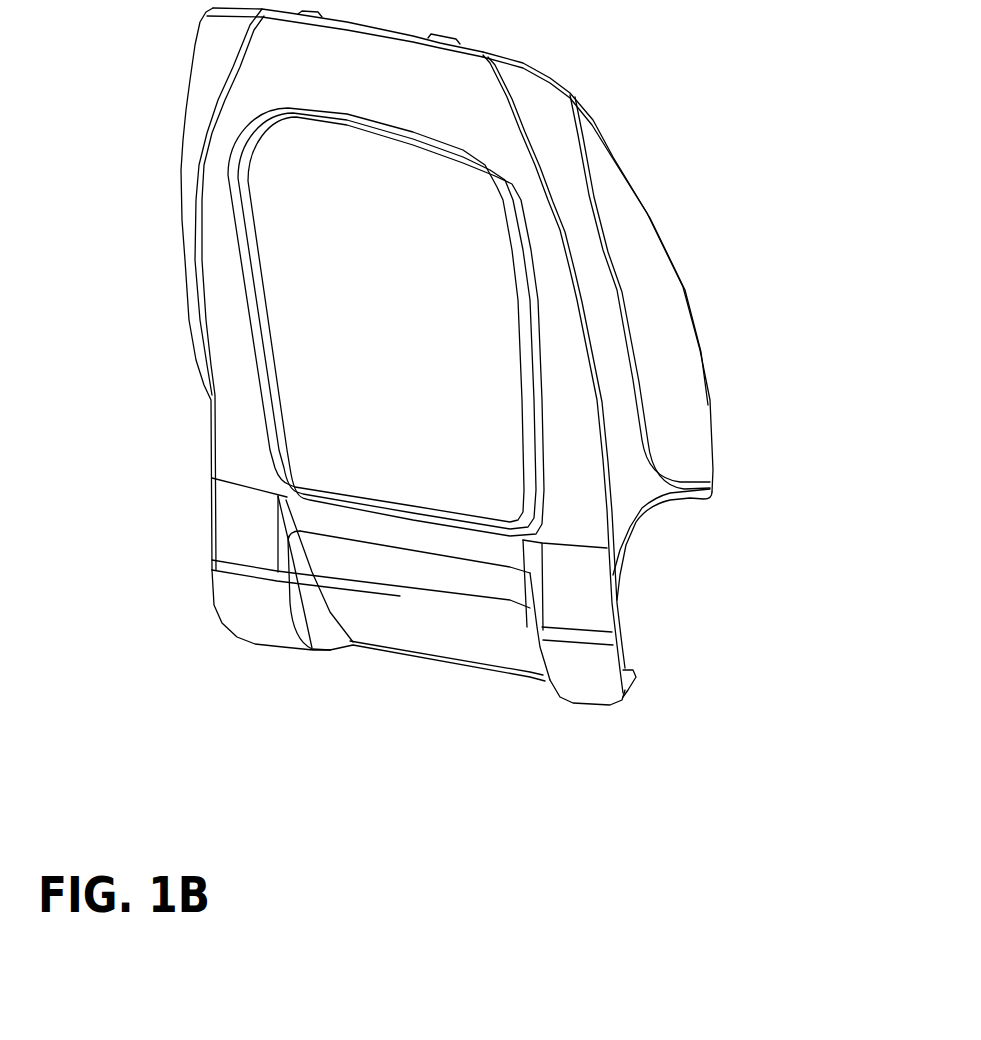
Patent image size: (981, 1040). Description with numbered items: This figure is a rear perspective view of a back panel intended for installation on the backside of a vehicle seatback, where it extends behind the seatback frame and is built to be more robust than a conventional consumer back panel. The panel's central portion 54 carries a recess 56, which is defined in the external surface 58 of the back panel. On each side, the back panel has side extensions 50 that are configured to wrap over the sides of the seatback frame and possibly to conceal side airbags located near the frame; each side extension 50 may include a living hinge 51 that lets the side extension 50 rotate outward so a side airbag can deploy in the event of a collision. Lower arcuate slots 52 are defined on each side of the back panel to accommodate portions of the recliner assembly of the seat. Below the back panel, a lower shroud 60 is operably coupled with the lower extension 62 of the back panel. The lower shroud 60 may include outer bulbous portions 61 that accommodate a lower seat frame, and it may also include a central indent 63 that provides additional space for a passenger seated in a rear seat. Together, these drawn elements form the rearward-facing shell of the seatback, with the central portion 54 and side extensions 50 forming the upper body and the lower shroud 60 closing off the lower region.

The side extensions 50 is at (690, 423).
The living hinge 51 is at (597, 213).
The lower arcuate slots 52 is at (653, 530).
The central portion 54 is at (355, 390).
The recess 56 is at (394, 307).
The external surface 58 is at (568, 377).
The lower shroud 60 is at (592, 678).
The outer bulbous portions 61 is at (262, 607).
The lower extension 62 is at (568, 598).
The central indent 63 is at (427, 620).